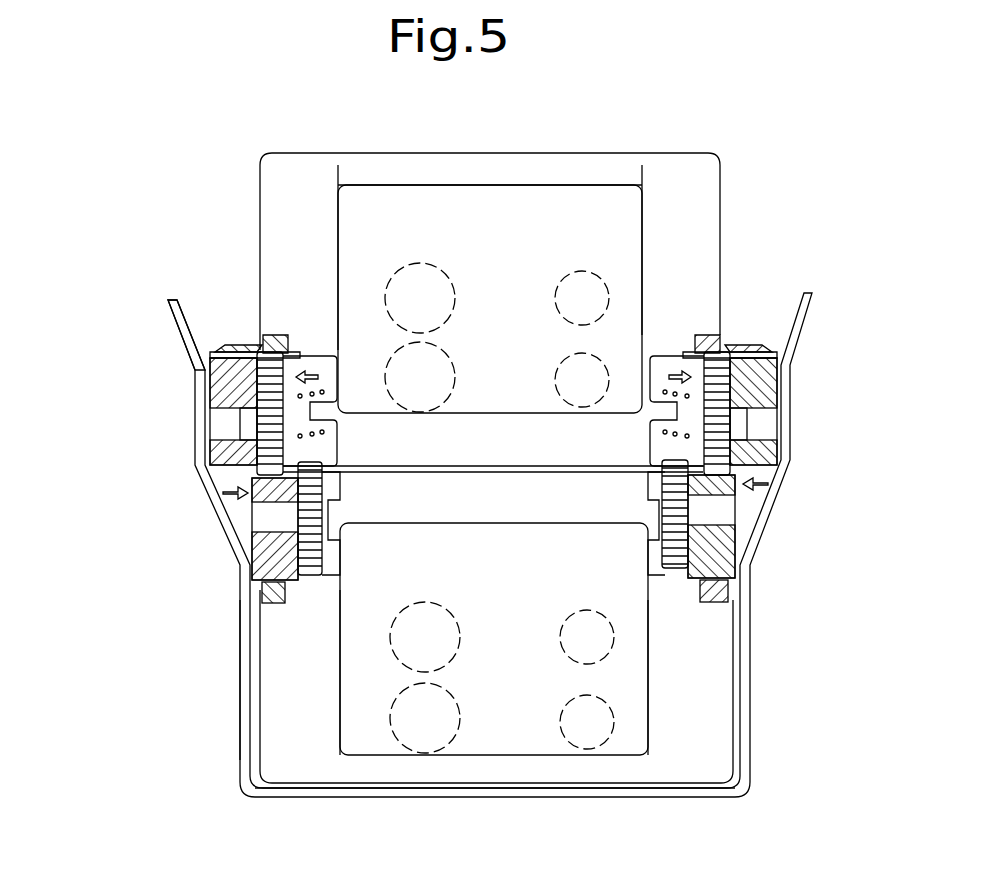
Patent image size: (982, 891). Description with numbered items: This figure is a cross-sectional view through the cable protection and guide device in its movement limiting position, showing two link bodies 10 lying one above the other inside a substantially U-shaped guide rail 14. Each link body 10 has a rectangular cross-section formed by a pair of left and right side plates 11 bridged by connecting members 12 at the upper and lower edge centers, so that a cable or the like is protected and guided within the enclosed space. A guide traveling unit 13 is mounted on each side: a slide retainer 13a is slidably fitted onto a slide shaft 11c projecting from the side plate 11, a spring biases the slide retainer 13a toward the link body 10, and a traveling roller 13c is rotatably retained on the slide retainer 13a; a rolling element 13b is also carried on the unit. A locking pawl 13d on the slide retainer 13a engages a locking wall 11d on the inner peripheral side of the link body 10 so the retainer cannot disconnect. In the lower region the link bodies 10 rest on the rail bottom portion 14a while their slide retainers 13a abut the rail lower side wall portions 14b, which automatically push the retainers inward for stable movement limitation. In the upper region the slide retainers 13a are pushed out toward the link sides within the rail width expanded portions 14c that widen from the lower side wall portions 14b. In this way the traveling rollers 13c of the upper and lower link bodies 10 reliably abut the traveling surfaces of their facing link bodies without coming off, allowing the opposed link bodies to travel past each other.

The link body 10 is at (742, 207).
The side plate 11 is at (318, 234).
The slide shaft 11c is at (335, 426).
The locking wall 11d is at (265, 352).
The connecting member 12 is at (504, 180).
The guide traveling unit 13 is at (411, 496).
The slide retainer 13a is at (222, 395).
The hinge roller 13b is at (262, 440).
The traveling roller 13c is at (236, 458).
The locking pawl 13d is at (214, 362).
The guide rail 14 is at (390, 799).
The U-shaped rail bottom portion 14a is at (518, 798).
The rail lower side wall portion 14b is at (238, 690).
The rail width expanded portion 14c is at (175, 326).